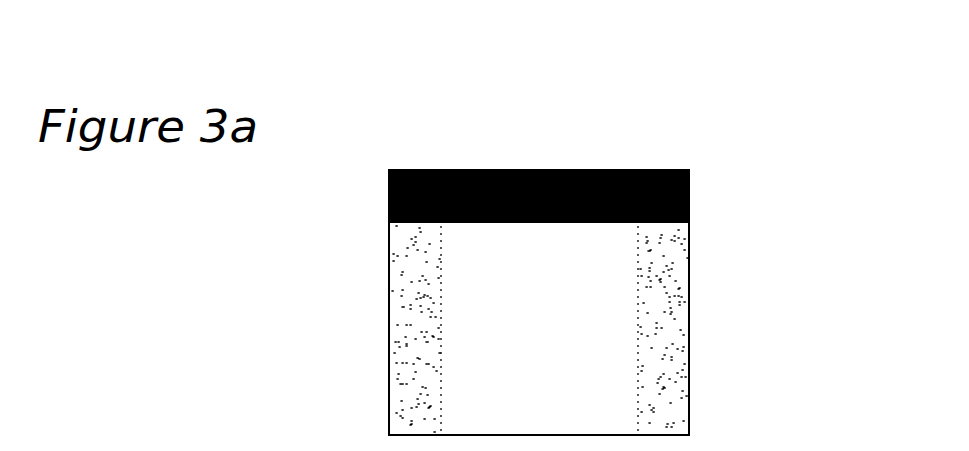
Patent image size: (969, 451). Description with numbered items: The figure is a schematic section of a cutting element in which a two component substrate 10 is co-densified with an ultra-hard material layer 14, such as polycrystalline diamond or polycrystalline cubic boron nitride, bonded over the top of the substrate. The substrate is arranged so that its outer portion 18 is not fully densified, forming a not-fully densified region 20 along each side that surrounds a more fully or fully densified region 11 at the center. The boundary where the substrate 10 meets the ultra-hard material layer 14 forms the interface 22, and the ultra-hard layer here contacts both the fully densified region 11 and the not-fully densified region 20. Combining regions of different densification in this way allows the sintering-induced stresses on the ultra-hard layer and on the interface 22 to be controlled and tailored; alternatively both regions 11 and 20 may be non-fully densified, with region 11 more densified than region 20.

The two component substrate 10 is at (452, 353).
The fully densified region 11 is at (565, 308).
The ultra-hard material layer 14 is at (541, 170).
The outer portion 18 is at (692, 328).
The not-fully densified region 20 is at (660, 390).
The interface 22 is at (541, 222).